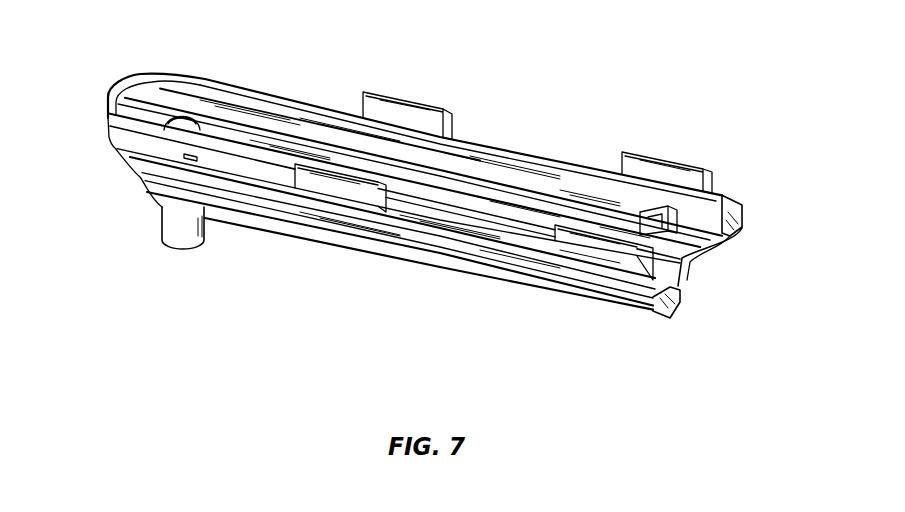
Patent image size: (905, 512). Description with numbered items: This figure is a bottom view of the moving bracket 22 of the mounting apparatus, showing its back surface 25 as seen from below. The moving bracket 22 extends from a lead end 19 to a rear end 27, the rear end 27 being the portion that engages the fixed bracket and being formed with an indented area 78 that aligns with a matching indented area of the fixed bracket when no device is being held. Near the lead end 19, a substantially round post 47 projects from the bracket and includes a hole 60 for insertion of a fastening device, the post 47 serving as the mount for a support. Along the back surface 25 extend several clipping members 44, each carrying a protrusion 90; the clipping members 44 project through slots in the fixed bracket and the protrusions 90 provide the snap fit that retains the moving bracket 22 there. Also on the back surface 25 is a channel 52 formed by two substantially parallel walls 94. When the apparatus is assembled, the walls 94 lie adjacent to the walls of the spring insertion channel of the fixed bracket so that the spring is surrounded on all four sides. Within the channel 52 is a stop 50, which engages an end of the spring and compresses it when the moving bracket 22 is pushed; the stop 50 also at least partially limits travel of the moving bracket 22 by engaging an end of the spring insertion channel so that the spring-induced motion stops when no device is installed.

The lead end 19 is at (109, 93).
The moving bracket 22 is at (170, 76).
The back surface 25 is at (111, 135).
The rear end 27 is at (742, 220).
The clipping members 44 is at (397, 100).
The post 47 is at (169, 221).
The stop 50 is at (693, 260).
The channel 52 is at (233, 134).
The hole 60 is at (178, 126).
The indented area 78 is at (697, 265).
The protrusions 90 is at (453, 117).
The walls 94 is at (303, 128).